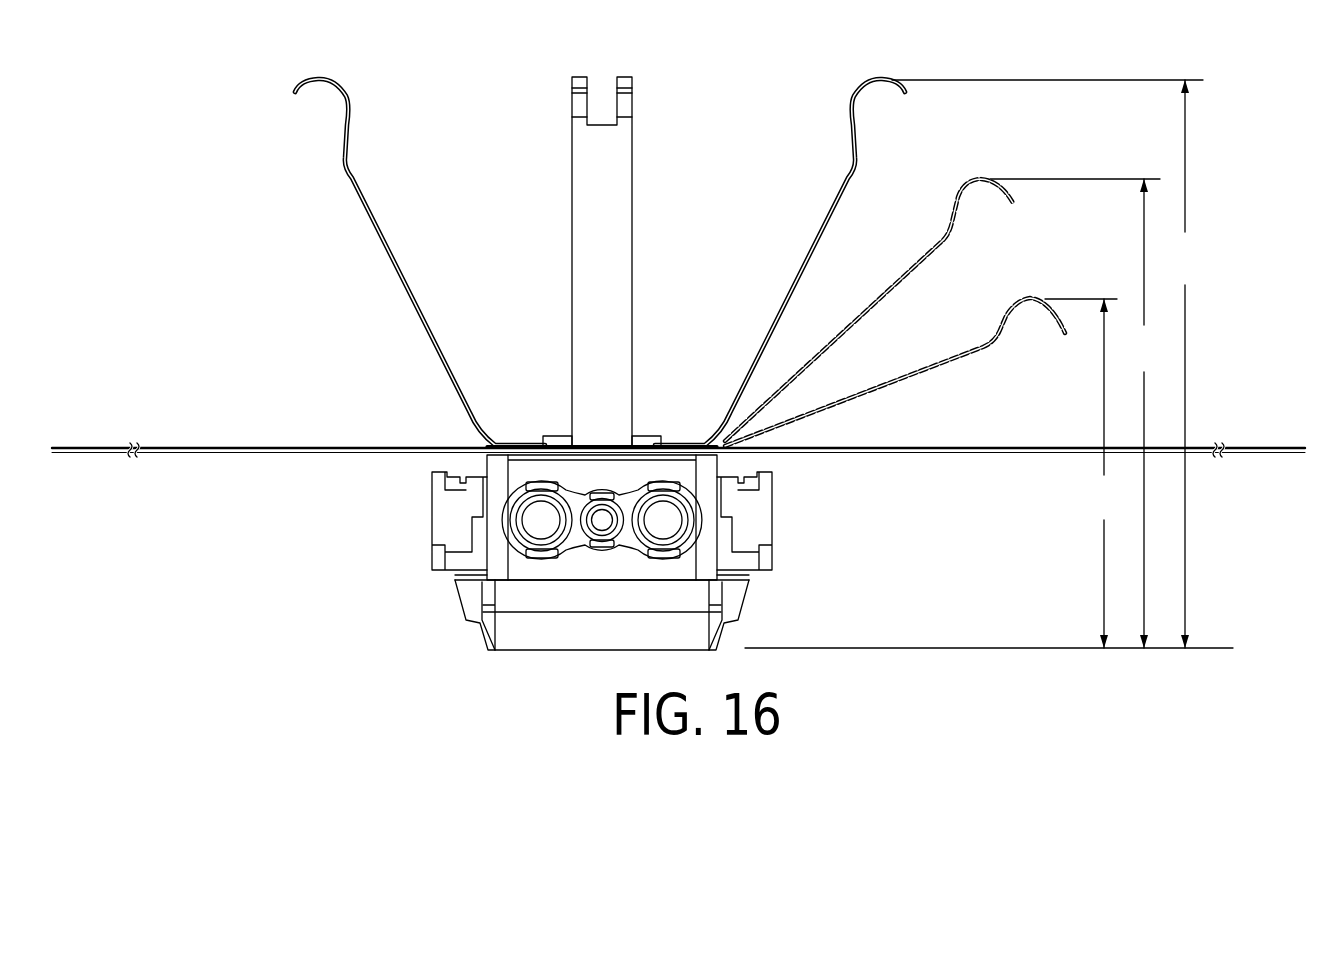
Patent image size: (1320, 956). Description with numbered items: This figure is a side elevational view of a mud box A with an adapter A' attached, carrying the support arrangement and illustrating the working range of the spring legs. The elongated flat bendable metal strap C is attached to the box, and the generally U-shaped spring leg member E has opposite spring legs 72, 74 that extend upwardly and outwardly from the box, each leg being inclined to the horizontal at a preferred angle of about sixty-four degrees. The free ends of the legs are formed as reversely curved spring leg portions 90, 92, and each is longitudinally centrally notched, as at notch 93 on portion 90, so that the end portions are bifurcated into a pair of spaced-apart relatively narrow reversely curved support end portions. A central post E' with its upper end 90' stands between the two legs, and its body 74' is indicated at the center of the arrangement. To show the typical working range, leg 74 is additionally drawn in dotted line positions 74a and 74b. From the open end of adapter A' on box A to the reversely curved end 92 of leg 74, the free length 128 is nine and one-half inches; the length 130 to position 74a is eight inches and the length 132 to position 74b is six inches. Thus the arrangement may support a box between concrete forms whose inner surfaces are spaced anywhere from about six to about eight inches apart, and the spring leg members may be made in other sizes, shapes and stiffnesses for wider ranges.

The reversely curved spring leg portion 90 is at (420, 238).
The top end of central post 90' is at (602, 227).
The notch 93 is at (540, 28).
The reversely curved spring leg portion 92 is at (847, 96).
The central post member E' is at (602, 227).
The spring leg 72 is at (420, 238).
The spring leg member E is at (420, 238).
The central post 74' is at (602, 227).
The spring leg 74 is at (780, 238).
The dotted line position of leg 74a is at (905, 287).
The dotted line position of leg 74b is at (918, 373).
The metal strap C is at (199, 446).
The box A is at (549, 536).
The adapter A' is at (574, 645).
The free length 128 is at (989, 364).
The length 130 is at (1076, 413).
The length 132 is at (1083, 473).